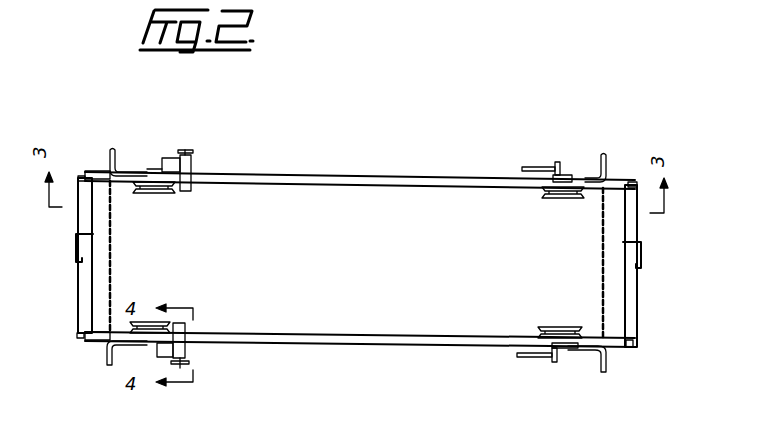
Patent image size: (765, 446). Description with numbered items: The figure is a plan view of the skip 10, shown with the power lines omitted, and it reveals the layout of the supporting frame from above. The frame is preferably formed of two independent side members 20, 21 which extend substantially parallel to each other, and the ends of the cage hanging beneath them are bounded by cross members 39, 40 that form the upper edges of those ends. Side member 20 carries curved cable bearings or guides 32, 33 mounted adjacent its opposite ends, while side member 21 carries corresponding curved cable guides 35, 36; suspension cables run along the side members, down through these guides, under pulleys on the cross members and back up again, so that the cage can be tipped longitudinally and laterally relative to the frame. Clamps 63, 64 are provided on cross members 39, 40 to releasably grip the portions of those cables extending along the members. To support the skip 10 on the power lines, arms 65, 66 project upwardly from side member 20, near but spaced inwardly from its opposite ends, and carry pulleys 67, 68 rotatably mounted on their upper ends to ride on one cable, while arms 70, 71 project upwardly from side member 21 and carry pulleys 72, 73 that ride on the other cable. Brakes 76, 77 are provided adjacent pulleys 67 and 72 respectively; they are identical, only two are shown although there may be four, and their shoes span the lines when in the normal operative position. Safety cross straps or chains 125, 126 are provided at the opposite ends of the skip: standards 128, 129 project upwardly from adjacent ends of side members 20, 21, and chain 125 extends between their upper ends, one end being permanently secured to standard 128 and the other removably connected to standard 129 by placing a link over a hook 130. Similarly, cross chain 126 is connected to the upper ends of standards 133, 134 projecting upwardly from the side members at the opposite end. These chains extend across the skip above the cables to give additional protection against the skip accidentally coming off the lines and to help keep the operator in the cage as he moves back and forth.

The skip 10 is at (445, 114).
The side member 20 is at (352, 152).
The side member 21 is at (364, 335).
The curved cable bearing or guide 32 is at (88, 171).
The curved cable bearing or guide 33 is at (636, 182).
The curved cable bearing or guide 35 is at (80, 341).
The curved cable bearing or guide 36 is at (631, 348).
The cross member 39 is at (78, 292).
The cross member 40 is at (636, 297).
The clamp 63 is at (75, 258).
The clamp 64 is at (643, 262).
The arm 65 is at (165, 158).
The arm 66 is at (566, 175).
The pulley 67 is at (153, 193).
The pulley 68 is at (568, 198).
The arm 70 is at (153, 348).
The arm 71 is at (574, 349).
The pulley 72 is at (152, 322).
The pulley 73 is at (560, 327).
The brake 76 is at (199, 156).
The brake 77 is at (199, 358).
The safety cross chain 125 is at (113, 242).
The safety cross chain 126 is at (600, 265).
The standard 128 is at (128, 130).
The standard 129 is at (107, 368).
The hook 130 is at (108, 341).
The standard 133 is at (603, 155).
The standard 134 is at (601, 373).